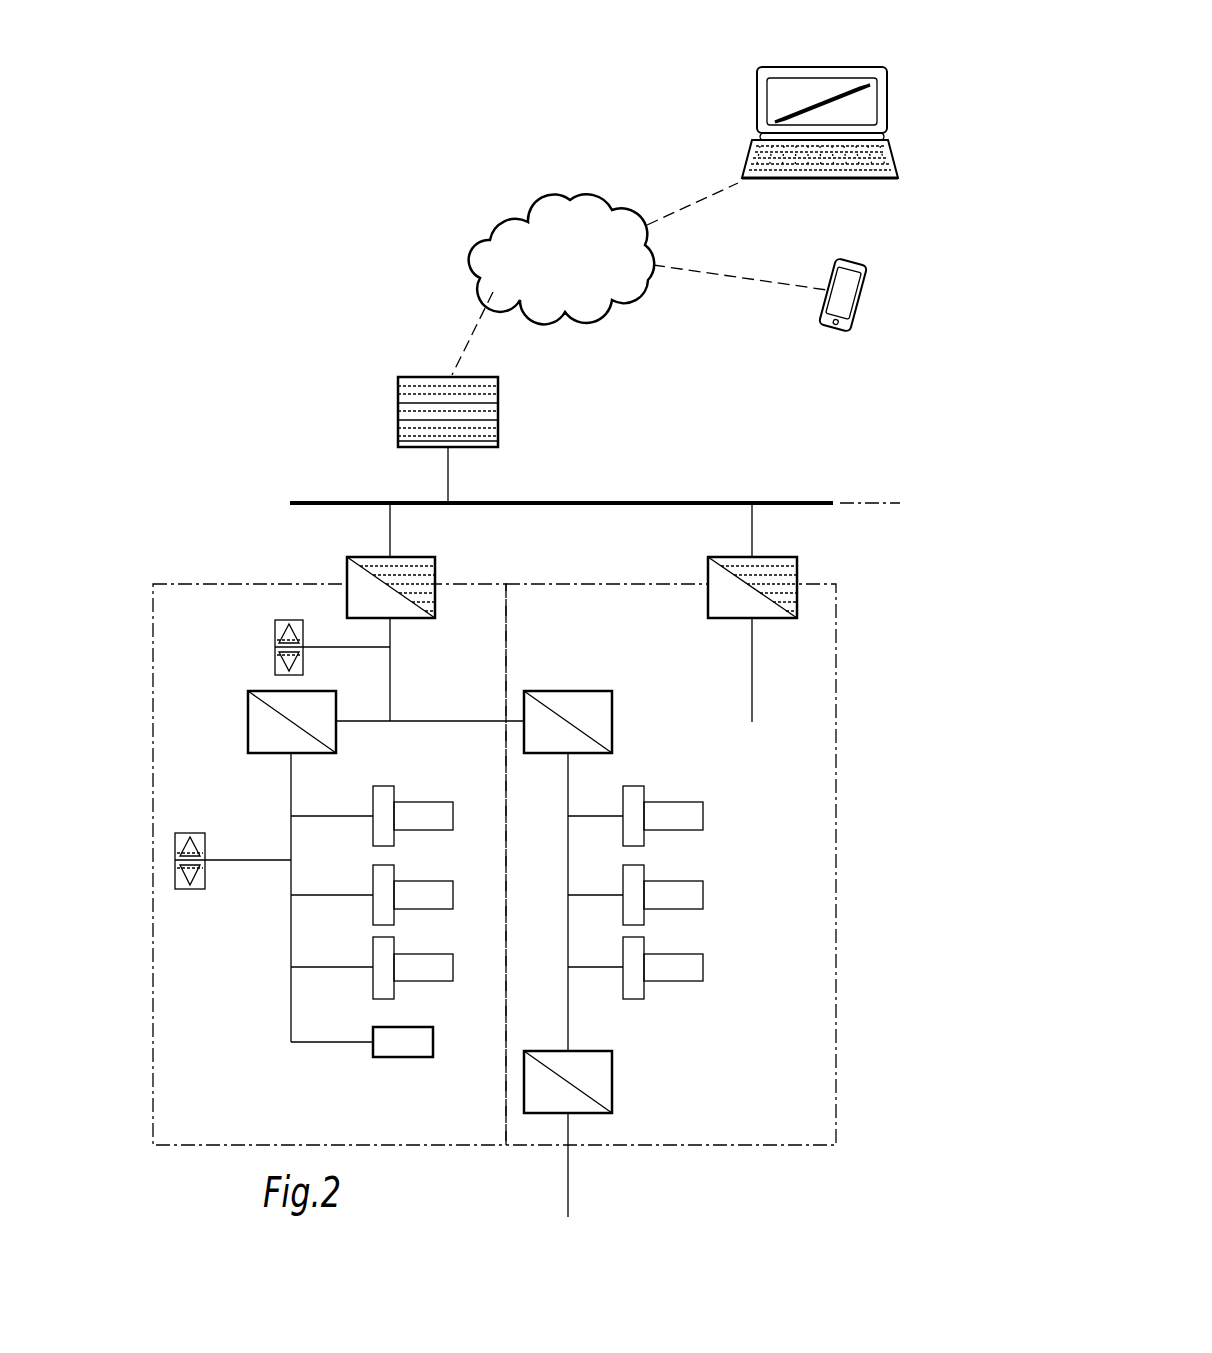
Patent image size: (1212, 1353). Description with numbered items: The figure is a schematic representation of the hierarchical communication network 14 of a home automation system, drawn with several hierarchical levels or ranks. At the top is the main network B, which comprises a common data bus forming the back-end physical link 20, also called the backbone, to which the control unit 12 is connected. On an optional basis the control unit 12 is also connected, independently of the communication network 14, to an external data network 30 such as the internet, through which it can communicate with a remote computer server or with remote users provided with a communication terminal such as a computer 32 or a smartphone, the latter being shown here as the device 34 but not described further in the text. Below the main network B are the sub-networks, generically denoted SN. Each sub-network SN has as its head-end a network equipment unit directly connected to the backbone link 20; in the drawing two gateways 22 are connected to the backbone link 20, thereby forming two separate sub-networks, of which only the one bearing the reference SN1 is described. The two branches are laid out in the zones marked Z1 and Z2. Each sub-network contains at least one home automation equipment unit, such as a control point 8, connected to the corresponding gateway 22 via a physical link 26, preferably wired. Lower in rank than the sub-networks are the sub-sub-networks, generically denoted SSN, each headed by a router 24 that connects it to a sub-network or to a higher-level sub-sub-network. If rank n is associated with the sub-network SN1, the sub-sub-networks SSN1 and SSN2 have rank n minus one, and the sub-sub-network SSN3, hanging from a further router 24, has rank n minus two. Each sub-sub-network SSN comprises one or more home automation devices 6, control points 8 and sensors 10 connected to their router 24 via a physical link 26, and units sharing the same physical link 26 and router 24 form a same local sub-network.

The communication network 14 is at (363, 222).
The external data network 30 is at (562, 259).
The computer 32 is at (893, 100).
The mobile phone 34 is at (873, 296).
The control unit 12 is at (428, 402).
The back-end physical link 20 is at (626, 501).
The gateway 22 is at (358, 605).
The router 24 is at (256, 728).
The control point 8 is at (284, 620).
The physical link 26 is at (291, 936).
The controllable home automation device 6 is at (446, 817).
The sensor 10 is at (422, 1043).
The zone 1 Z1 is at (178, 583).
The zone 2 Z2 is at (820, 583).
The sub-network SN1 is at (458, 583).
The sub-sub-network SSN1 is at (280, 975).
The sub-sub-network SSN2 is at (638, 760).
The sub-sub-network SSN3 is at (623, 1109).
The main network B is at (915, 368).
The sub-network SN is at (915, 580).
The sub-sub-network SSN is at (915, 733).